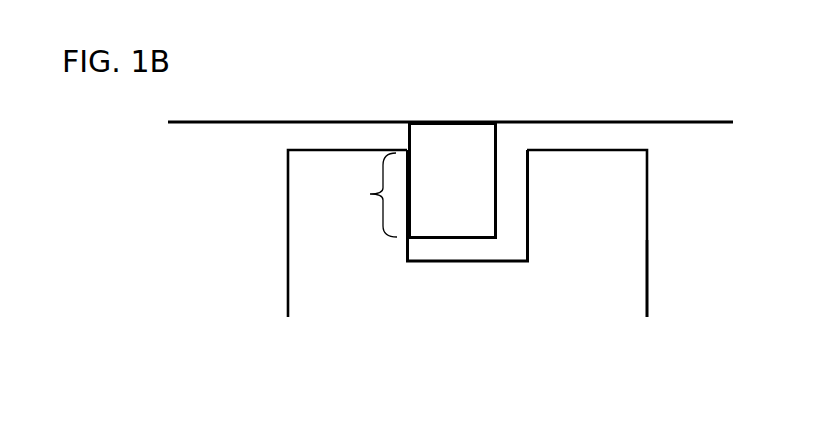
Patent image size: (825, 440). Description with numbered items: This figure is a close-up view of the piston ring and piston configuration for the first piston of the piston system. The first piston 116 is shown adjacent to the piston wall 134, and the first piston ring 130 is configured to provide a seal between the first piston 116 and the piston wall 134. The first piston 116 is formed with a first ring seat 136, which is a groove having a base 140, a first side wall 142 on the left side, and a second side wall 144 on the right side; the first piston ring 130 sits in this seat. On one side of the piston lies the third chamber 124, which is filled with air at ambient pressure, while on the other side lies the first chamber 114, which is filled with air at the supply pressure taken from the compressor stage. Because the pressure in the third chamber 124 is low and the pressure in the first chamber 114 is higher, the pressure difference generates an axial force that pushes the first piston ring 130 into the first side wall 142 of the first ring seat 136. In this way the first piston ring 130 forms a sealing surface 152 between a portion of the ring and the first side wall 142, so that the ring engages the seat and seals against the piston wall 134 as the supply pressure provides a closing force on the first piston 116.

The piston wall 134 is at (706, 122).
The first piston ring 130 is at (455, 148).
The third chamber 124 is at (222, 198).
The first chamber 114 is at (722, 184).
The first piston 116 is at (637, 303).
The base 140 is at (468, 262).
The second side wall 144 is at (529, 207).
The first side wall 142 is at (408, 245).
The sealing surface 152 is at (362, 195).
The first ring seat 136 is at (455, 298).